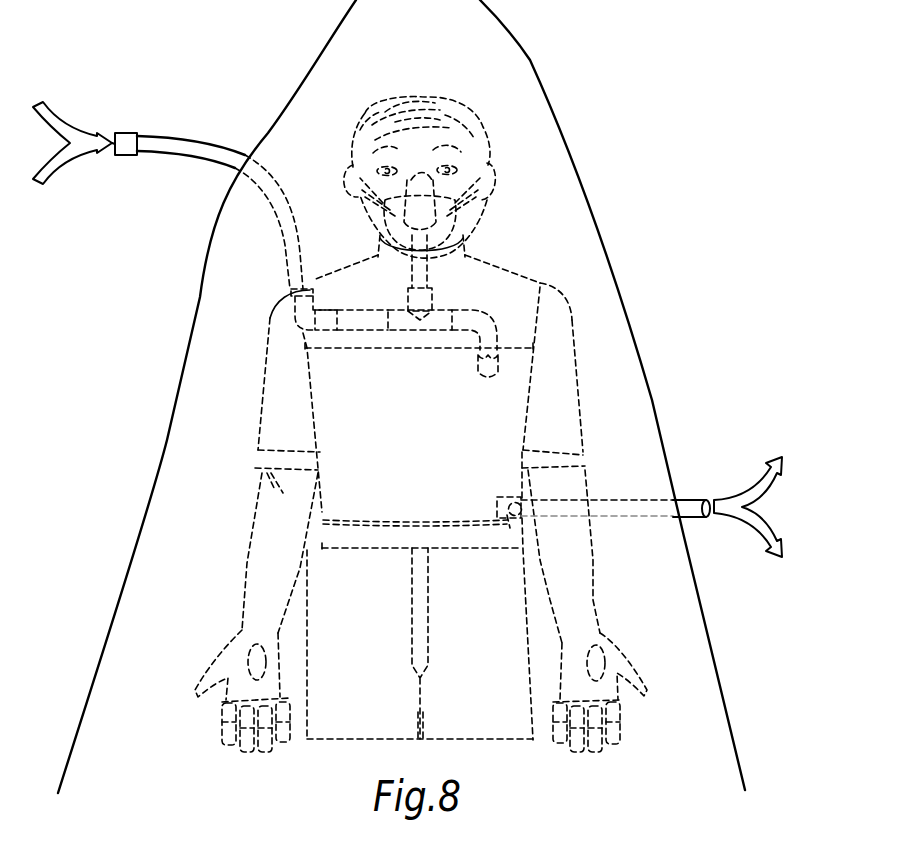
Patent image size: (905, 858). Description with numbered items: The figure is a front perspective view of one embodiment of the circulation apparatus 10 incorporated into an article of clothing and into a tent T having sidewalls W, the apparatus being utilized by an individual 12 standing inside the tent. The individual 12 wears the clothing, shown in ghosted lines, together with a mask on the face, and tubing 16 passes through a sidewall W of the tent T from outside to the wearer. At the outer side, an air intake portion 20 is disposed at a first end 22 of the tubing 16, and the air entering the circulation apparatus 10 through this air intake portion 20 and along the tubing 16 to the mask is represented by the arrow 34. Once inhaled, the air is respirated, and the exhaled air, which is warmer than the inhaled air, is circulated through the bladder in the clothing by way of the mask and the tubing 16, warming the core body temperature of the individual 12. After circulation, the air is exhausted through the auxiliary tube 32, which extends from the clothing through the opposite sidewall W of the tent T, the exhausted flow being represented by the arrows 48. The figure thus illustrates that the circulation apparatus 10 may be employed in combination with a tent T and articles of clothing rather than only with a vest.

The circulation apparatus 10 is at (637, 171).
The individual 12 is at (277, 412).
The tubing 16 is at (198, 136).
The air intake portion 20 is at (128, 133).
The first end 22 is at (112, 152).
The auxiliary tube 32 is at (610, 498).
The arrow 34 is at (67, 125).
The arrows 48 is at (752, 492).
The tent T is at (533, 53).
The sidewalls W is at (630, 313).